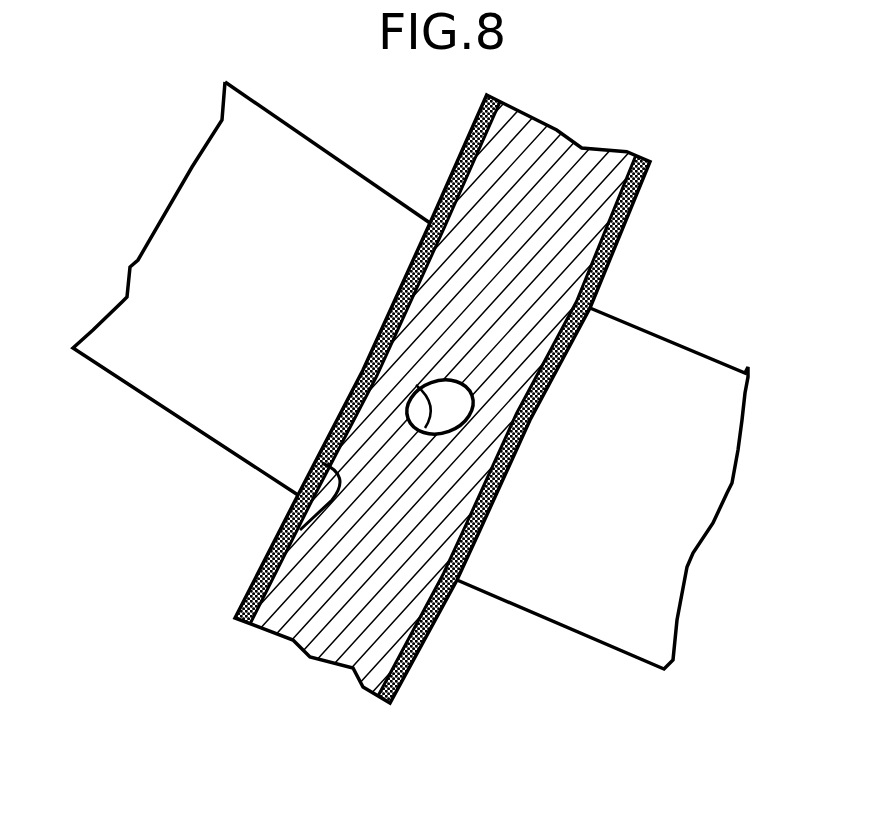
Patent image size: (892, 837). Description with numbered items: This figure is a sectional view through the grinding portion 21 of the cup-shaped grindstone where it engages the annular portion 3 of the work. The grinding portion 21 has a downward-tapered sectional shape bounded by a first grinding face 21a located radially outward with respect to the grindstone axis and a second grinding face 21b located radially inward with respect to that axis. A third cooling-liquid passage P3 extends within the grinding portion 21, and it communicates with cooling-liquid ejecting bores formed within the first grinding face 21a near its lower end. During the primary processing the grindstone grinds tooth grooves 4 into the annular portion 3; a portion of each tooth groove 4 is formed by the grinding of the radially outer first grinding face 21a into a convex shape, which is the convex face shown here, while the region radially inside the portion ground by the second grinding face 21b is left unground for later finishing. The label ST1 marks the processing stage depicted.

The annular portion 3 is at (668, 357).
The tooth groove 4 is at (327, 487).
The grinding portion 21 is at (446, 400).
The first grinding face 21a is at (563, 368).
The second grinding face 21b is at (375, 334).
The third cooling-liquid passage P3 is at (417, 385).
The step / direction ST1 is at (280, 445).